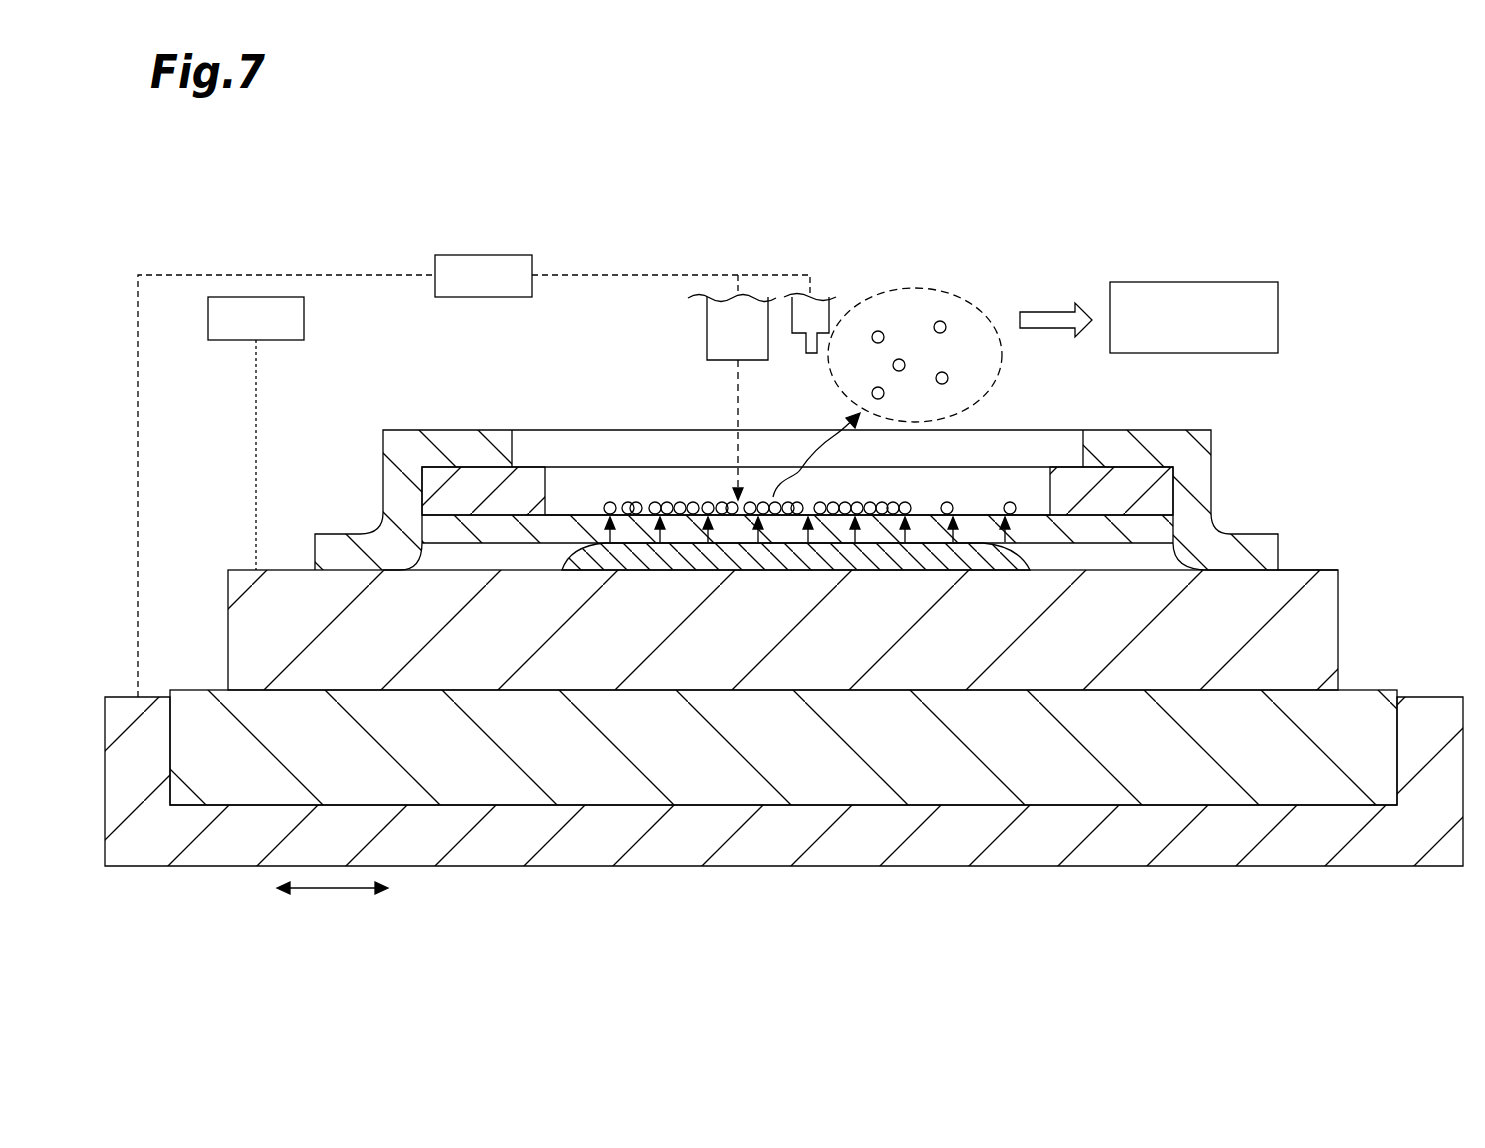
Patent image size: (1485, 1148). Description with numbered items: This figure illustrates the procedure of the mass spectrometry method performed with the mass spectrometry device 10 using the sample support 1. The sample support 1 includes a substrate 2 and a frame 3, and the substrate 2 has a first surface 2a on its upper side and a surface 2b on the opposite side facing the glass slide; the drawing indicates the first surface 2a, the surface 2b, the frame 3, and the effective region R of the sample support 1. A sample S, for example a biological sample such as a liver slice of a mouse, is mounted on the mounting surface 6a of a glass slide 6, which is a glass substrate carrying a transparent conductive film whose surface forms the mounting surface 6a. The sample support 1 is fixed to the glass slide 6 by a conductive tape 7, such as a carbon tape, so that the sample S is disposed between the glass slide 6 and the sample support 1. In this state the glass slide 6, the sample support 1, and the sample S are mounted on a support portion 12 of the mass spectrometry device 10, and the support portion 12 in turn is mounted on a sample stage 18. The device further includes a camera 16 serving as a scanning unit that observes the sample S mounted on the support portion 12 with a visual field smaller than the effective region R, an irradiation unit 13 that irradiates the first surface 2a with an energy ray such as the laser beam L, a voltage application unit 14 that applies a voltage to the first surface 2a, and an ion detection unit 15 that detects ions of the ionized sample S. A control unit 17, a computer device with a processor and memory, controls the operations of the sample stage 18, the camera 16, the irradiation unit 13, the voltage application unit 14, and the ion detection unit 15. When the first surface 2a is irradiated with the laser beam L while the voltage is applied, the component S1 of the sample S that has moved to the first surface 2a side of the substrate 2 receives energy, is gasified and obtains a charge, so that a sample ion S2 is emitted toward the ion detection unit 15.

The sample support 1 is at (1153, 461).
The substrate 2 is at (1157, 531).
The first surface 2a is at (574, 513).
The lower portion of stage plate 2b is at (553, 547).
The frame 3 is at (1066, 480).
The glass slide 6 is at (1338, 643).
The mounting surface 6a is at (1302, 570).
The tape 7 is at (352, 533).
The mass spectrometry device 10 is at (1267, 271).
The support portion 12 is at (200, 690).
The irradiation unit 13 is at (707, 333).
The voltage application unit 14 is at (304, 315).
The ion detection unit 15 is at (1278, 317).
The camera 16 is at (822, 312).
The control unit 17 is at (478, 255).
The sample stage 18 is at (504, 866).
The laser beam L is at (736, 396).
The effective region R is at (1032, 510).
The sample S is at (1047, 573).
The component S1 is at (902, 505).
The sample ion S2 is at (878, 330).